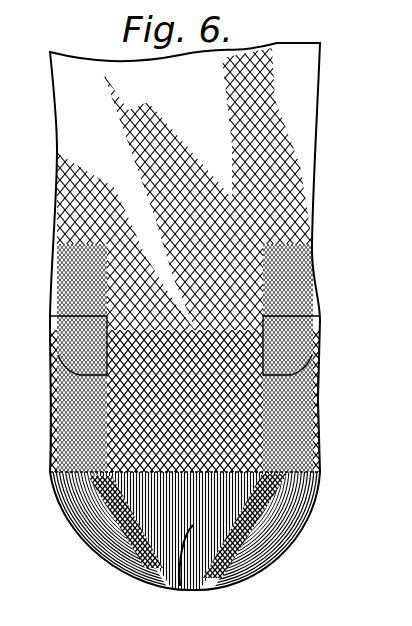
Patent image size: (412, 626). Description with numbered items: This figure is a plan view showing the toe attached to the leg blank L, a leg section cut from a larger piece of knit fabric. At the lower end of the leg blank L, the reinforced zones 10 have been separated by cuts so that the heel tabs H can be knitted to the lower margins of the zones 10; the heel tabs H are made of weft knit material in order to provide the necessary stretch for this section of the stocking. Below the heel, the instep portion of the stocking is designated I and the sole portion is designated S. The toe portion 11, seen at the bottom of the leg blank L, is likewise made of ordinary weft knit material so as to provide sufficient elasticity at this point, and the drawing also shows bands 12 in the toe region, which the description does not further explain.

The leg blank L is at (297, 145).
The reinforced zone 10 is at (313, 275).
The heel tab H is at (58, 352).
The sole portion S is at (318, 408).
The instep portion I is at (200, 428).
The toe reinforcing bands 12 is at (245, 535).
The toe portion 11 is at (180, 588).